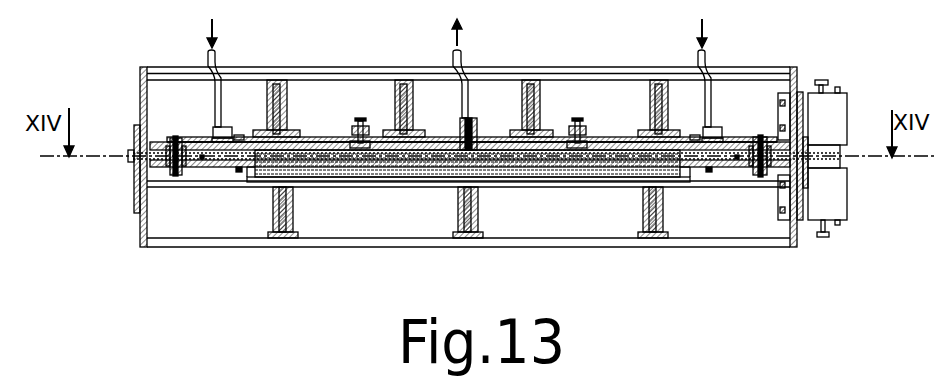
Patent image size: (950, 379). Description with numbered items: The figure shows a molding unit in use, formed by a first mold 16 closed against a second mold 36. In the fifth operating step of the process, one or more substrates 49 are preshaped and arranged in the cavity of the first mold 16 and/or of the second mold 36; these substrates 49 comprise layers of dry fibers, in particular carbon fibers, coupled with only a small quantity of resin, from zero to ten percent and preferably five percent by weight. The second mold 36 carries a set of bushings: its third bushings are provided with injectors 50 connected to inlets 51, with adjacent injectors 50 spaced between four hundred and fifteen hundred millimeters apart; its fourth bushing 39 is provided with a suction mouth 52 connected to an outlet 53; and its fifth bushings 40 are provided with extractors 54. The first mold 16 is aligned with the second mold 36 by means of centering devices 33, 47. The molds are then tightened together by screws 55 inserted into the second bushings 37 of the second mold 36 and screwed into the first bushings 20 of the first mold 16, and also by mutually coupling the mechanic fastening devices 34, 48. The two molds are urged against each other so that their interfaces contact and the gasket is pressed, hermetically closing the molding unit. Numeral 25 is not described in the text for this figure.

The first mold 16 is at (388, 181).
The first bushings 20 is at (175, 172).
The pin 25 is at (227, 163).
The centering device 33 is at (840, 182).
The mechanic fastening device 34 is at (130, 183).
The second mold 36 is at (398, 142).
The second bushings 37 is at (167, 143).
The fourth bushing 39 is at (460, 128).
The fifth bushings 40 is at (348, 135).
The centering device 47 is at (840, 137).
The mechanic fastening device 48 is at (808, 100).
The substrates 49 is at (333, 167).
The injectors 50 is at (225, 128).
The inlets 51 is at (207, 56).
The suction mouth 52 is at (477, 130).
The outlet 53 is at (453, 56).
The extractors 54 is at (356, 130).
The screws 55 is at (167, 137).